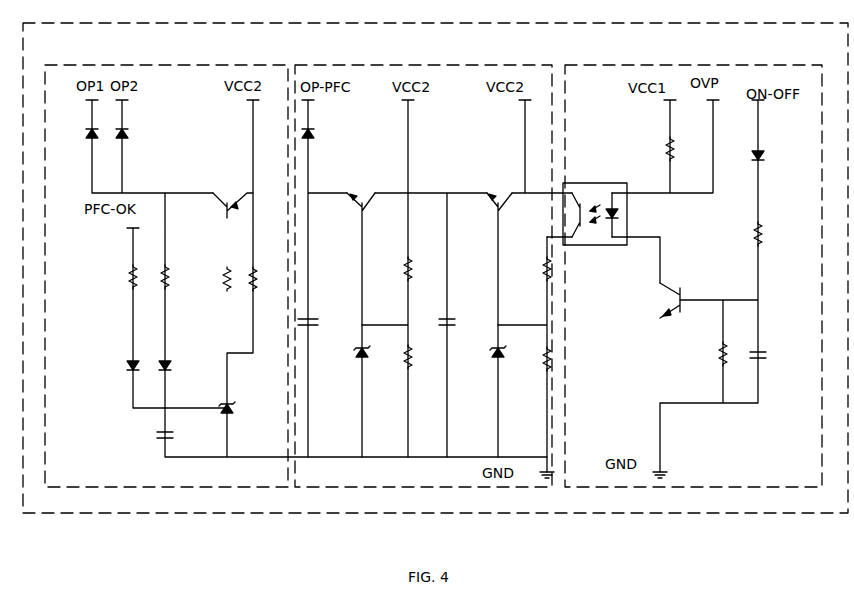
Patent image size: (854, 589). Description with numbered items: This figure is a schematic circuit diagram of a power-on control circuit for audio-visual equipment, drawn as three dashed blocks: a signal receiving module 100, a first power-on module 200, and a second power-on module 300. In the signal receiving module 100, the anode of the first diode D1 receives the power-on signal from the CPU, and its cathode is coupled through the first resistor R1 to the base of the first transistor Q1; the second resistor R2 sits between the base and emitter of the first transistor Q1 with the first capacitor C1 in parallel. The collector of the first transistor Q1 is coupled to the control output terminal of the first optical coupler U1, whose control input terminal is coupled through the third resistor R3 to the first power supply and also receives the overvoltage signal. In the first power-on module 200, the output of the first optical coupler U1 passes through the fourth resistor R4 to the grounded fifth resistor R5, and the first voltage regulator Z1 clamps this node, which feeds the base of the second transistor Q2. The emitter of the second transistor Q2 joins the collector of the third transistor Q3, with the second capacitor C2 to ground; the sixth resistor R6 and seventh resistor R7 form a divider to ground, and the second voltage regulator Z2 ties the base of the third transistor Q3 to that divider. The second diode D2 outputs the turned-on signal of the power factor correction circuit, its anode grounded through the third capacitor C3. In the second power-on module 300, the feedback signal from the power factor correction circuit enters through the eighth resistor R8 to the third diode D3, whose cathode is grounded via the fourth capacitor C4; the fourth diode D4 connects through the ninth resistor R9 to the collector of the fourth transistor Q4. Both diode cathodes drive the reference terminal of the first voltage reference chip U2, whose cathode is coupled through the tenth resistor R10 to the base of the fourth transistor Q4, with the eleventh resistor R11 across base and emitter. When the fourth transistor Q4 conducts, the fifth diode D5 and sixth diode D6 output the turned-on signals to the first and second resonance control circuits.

The signal receiving module 100 is at (668, 64).
The first power-on module 200 is at (403, 64).
The second power-on module 300 is at (106, 64).
The first diode D1 is at (773, 159).
The second diode D2 is at (323, 137).
The third diode D3 is at (113, 369).
The fourth diode D4 is at (176, 369).
The fifth diode D5 is at (74, 137).
The sixth diode D6 is at (138, 137).
The first resistor R1 is at (774, 234).
The second resistor R2 is at (708, 357).
The third resistor R3 is at (655, 149).
The fourth resistor R4 is at (530, 269).
The fifth resistor R5 is at (531, 353).
The sixth resistor R6 is at (418, 269).
The seventh resistor R7 is at (418, 364).
The eighth resistor R8 is at (113, 279).
The ninth resistor R9 is at (175, 288).
The tenth resistor R10 is at (206, 278).
The eleventh resistor R11 is at (266, 279).
The first capacitor C1 is at (774, 359).
The second capacitor C2 is at (456, 322).
The third capacitor C3 is at (317, 318).
The fourth capacitor C4 is at (148, 436).
The first transistor Q1 is at (681, 296).
The second transistor Q2 is at (488, 325).
The third transistor Q3 is at (353, 325).
The fourth transistor Q4 is at (221, 213).
The first voltage regulator Z1 is at (486, 364).
The second voltage regulator Z2 is at (350, 364).
The first optical coupler U1 is at (595, 201).
The first voltage reference chip U2 is at (237, 411).